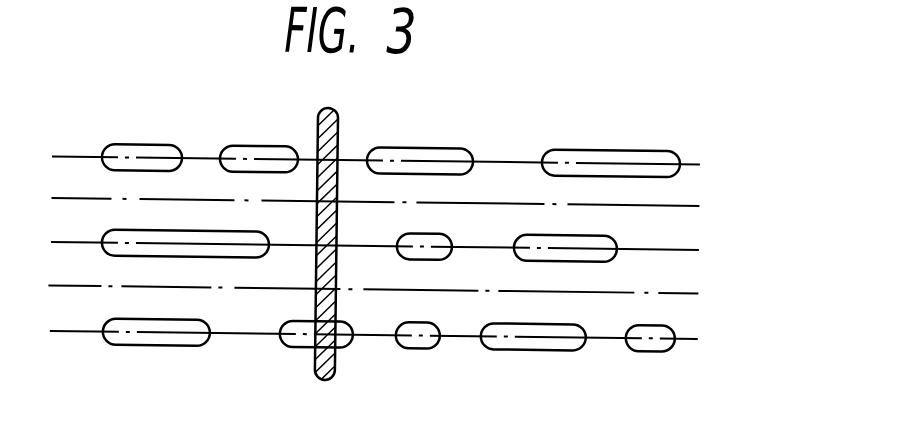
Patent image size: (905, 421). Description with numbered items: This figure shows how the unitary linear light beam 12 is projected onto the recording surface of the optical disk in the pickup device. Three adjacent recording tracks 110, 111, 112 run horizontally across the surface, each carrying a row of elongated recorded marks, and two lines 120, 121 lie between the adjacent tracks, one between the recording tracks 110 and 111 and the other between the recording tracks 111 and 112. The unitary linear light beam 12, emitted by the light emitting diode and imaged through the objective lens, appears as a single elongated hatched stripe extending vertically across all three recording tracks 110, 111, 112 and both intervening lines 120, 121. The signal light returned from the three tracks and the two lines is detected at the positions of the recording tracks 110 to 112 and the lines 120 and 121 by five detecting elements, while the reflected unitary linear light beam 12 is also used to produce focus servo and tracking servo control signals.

The unitary linear light beam 12 is at (332, 105).
The recording track 110 is at (700, 156).
The recording track 111 is at (700, 242).
The recording track 112 is at (700, 331).
The line between adjacent tracks 120 is at (700, 198).
The line between adjacent tracks 121 is at (700, 286).